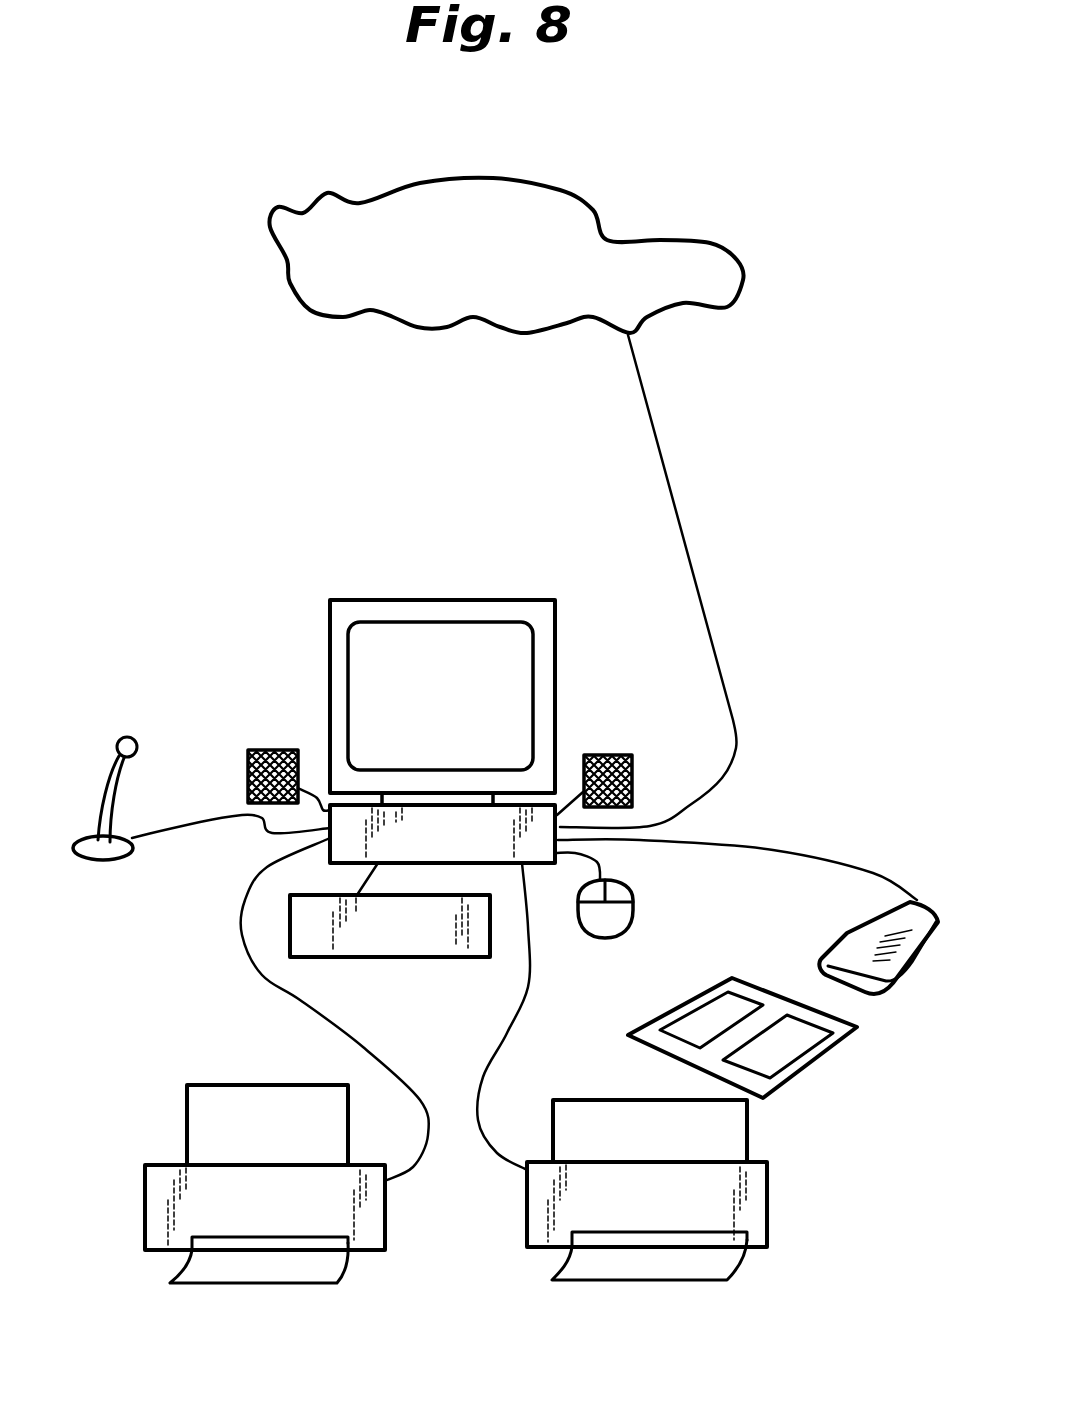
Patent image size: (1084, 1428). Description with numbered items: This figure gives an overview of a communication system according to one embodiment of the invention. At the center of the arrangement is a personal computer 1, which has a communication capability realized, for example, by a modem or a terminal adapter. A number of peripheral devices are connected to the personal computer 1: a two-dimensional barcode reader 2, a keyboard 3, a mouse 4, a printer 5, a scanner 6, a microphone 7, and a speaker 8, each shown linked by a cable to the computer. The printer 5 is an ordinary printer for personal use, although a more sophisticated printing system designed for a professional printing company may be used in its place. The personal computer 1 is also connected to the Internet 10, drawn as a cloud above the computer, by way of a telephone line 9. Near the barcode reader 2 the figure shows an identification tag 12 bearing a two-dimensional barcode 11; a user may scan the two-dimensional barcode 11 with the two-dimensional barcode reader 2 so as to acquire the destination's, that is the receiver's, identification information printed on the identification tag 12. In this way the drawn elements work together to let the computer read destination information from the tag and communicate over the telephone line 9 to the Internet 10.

The personal computer 1 is at (328, 683).
The two-dimensional barcode reader 2 is at (897, 965).
The keyboard 3 is at (403, 945).
The mouse 4 is at (617, 910).
The printer 5 is at (385, 1212).
The scanner 6 is at (757, 1215).
The microphone 7 is at (83, 860).
The speaker 8 is at (248, 752).
The telephone line 9 is at (733, 723).
The Internet 10 is at (710, 248).
The two-dimensional barcode 11 is at (853, 1032).
The identification tag 12 is at (680, 1007).